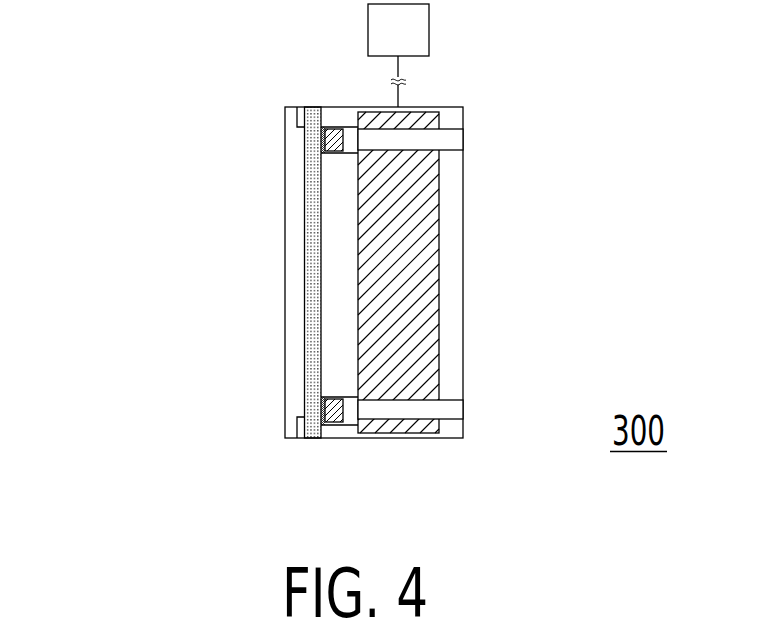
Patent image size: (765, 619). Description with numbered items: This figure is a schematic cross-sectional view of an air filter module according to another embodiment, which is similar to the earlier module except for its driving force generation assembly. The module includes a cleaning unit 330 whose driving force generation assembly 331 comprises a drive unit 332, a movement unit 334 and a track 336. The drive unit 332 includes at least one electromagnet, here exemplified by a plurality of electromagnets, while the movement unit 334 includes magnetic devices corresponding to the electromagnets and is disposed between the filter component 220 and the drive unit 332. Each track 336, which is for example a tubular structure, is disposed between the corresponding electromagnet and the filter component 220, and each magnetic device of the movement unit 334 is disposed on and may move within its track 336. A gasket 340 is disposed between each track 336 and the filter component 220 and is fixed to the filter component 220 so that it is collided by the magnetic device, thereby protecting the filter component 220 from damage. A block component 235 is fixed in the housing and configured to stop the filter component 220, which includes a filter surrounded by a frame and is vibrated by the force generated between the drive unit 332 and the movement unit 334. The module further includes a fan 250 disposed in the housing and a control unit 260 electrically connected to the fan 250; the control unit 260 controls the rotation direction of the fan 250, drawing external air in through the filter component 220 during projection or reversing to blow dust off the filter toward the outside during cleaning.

The filter component 220 is at (313, 111).
The block component 235 is at (303, 123).
The fan 250 is at (417, 232).
The control unit 260 is at (422, 28).
The cleaning unit 330 is at (117, 328).
The driving force generation assembly 331 is at (188, 388).
The drive unit 332 is at (403, 410).
The movement unit 334 is at (324, 399).
The track 336 is at (338, 423).
The gasket 340 is at (325, 397).